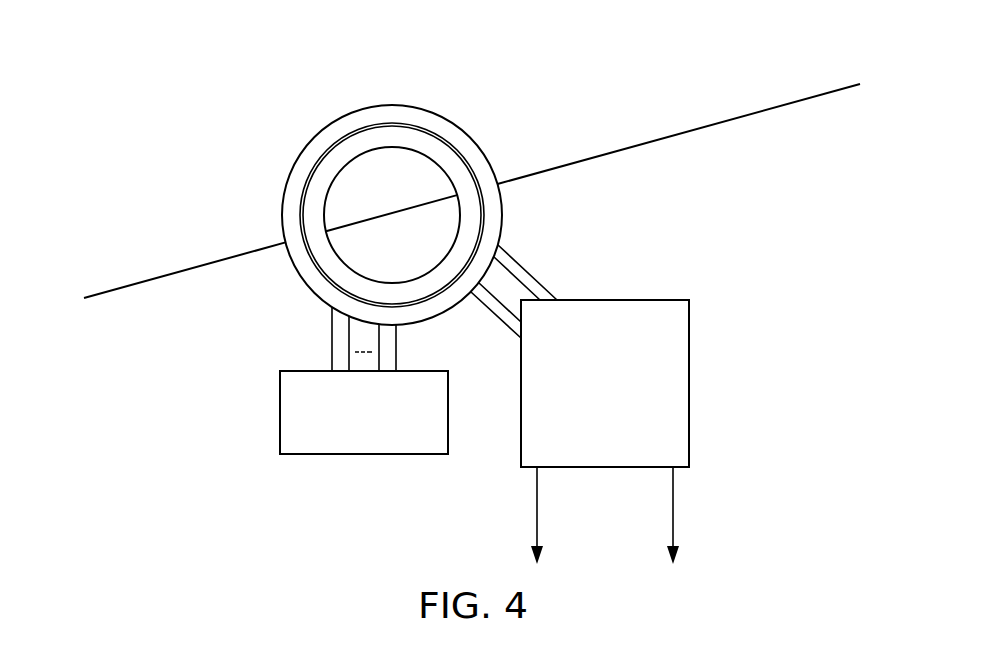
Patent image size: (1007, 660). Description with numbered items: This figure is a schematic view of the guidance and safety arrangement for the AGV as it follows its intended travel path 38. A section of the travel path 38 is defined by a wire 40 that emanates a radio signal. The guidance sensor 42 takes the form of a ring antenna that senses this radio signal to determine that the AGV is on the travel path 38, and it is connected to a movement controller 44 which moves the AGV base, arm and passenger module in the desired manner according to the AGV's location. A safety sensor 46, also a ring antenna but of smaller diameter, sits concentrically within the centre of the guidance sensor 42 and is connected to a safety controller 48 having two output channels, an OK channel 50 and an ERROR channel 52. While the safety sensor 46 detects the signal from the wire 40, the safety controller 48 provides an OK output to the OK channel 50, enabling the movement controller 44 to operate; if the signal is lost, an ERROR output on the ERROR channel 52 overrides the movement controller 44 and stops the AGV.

The travel path 38 is at (745, 82).
The wire 40 is at (645, 143).
The guidance sensor 42 is at (283, 188).
The movement controller 44 is at (363, 454).
The safety sensor 46 is at (427, 134).
The safety controller 48 is at (689, 383).
The OK channel 50 is at (537, 516).
The ERROR channel 52 is at (673, 519).